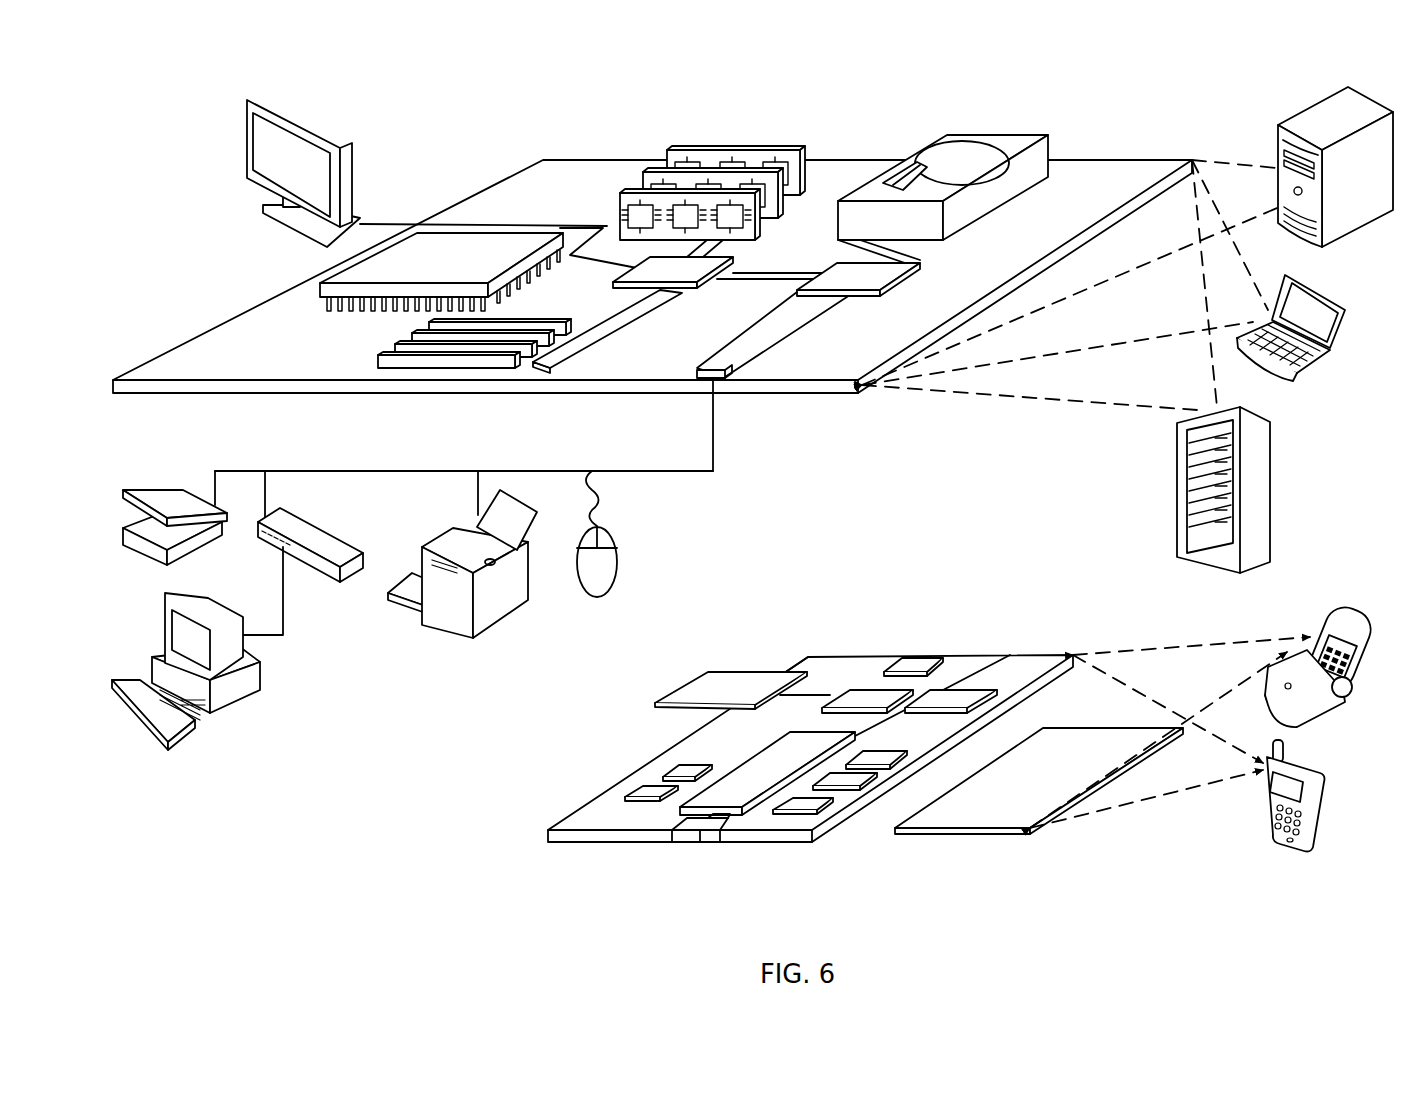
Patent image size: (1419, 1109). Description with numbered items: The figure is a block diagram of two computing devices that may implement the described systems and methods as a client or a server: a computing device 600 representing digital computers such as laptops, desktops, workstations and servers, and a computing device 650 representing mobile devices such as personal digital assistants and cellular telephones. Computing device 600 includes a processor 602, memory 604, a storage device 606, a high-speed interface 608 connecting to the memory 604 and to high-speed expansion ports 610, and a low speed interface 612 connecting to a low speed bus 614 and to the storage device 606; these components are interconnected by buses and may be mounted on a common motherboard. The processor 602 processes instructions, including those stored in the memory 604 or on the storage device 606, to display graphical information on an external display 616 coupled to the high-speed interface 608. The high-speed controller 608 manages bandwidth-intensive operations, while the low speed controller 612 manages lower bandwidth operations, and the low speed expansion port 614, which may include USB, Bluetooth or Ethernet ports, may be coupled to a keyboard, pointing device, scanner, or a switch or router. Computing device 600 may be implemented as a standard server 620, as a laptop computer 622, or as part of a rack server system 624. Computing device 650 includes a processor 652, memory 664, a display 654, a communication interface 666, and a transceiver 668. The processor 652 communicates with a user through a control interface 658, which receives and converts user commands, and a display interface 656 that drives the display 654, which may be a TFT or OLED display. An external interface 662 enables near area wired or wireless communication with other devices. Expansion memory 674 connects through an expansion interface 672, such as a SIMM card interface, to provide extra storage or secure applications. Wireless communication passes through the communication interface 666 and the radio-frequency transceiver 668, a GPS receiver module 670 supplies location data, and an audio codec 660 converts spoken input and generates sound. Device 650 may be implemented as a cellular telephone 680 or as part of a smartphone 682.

The computing device 600 is at (462, 132).
The processor 602 is at (320, 290).
The memory 604 is at (690, 158).
The storage device 606 is at (930, 137).
The high-speed interface 608 is at (647, 268).
The high-speed expansion ports 610 is at (397, 350).
The low speed interface 612 is at (838, 270).
The low speed bus 614 is at (727, 380).
The display 616 is at (246, 100).
The standard server 620 is at (1278, 143).
The laptop computer 622 is at (1348, 310).
The rack server system 624 is at (1177, 516).
The computing device 650 is at (520, 840).
The processor 652 is at (738, 797).
The display 654 is at (993, 815).
The display interface 656 is at (803, 810).
The control interface 658 is at (862, 781).
The audio codec 660 is at (882, 762).
The external interface 662 is at (702, 833).
The memory 664 is at (655, 797).
The communication interface 666 is at (868, 698).
The transceiver 668 is at (952, 698).
The GPS receiver module 670 is at (923, 658).
The expansion interface 672 is at (793, 668).
The expansion memory 674 is at (712, 671).
The cellular telephone 680 is at (1328, 608).
The smartphone 682 is at (1267, 797).